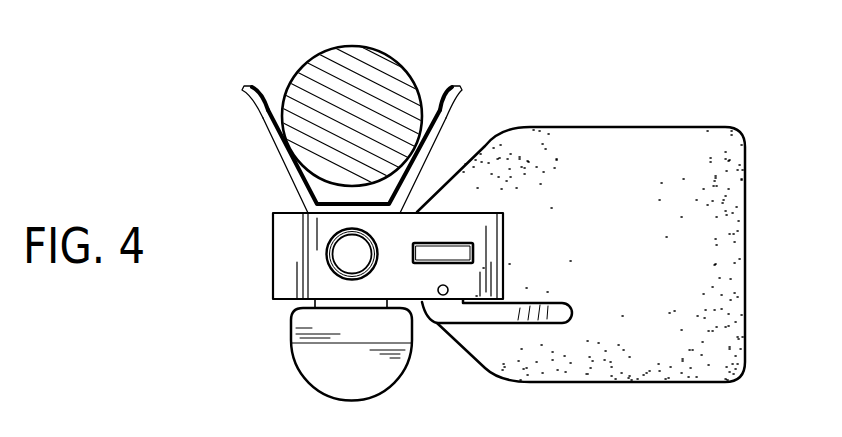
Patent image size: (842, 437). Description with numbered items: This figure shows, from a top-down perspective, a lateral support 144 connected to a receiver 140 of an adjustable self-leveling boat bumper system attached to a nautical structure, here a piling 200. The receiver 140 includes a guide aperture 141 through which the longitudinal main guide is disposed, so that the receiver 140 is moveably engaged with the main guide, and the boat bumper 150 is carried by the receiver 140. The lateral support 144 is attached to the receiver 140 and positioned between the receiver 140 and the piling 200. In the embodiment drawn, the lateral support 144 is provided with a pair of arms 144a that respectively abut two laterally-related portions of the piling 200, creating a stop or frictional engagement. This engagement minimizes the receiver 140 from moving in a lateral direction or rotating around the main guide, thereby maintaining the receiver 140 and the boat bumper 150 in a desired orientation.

The piling 200 is at (397, 82).
The lateral support 144 is at (292, 171).
The arms 144a is at (263, 120).
The guide aperture 141 is at (328, 242).
The receiver 140 is at (285, 278).
The boat bumper 150 is at (334, 376).